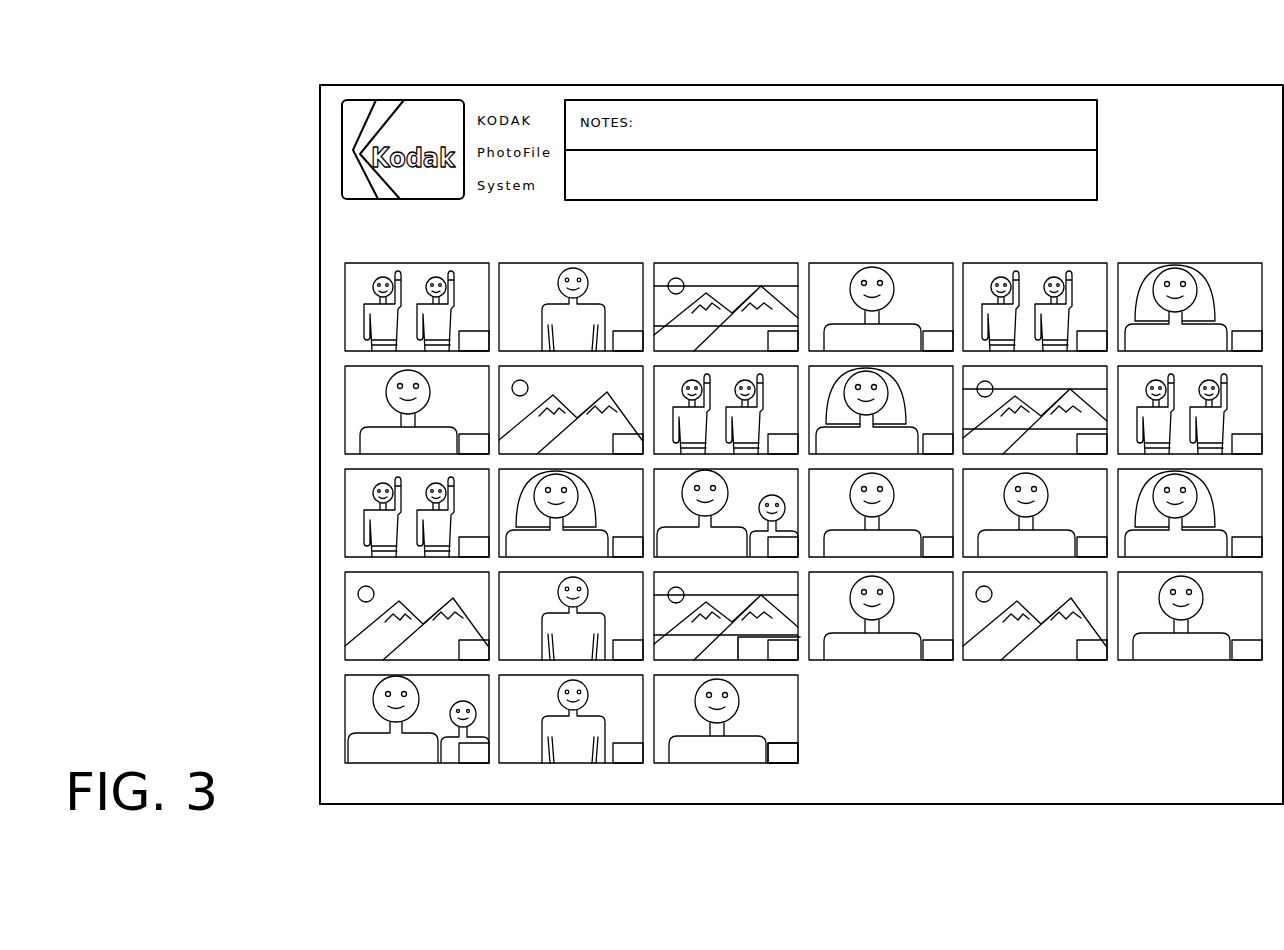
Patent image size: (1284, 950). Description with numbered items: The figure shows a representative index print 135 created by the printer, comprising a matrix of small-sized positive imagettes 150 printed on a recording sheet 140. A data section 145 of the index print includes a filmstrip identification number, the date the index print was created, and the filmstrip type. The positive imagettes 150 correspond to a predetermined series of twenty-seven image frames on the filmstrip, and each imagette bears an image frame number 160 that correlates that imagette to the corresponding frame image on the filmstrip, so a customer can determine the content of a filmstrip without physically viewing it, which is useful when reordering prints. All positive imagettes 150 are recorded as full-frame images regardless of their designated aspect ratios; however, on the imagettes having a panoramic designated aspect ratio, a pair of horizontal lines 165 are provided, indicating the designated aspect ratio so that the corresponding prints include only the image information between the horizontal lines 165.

The index print 135 is at (252, 76).
The recording sheet 140 is at (1178, 796).
The data section 145 is at (1167, 90).
The positive imagettes 150 is at (352, 403).
The image frame number 160 is at (799, 753).
The horizontal lines 165 is at (788, 597).